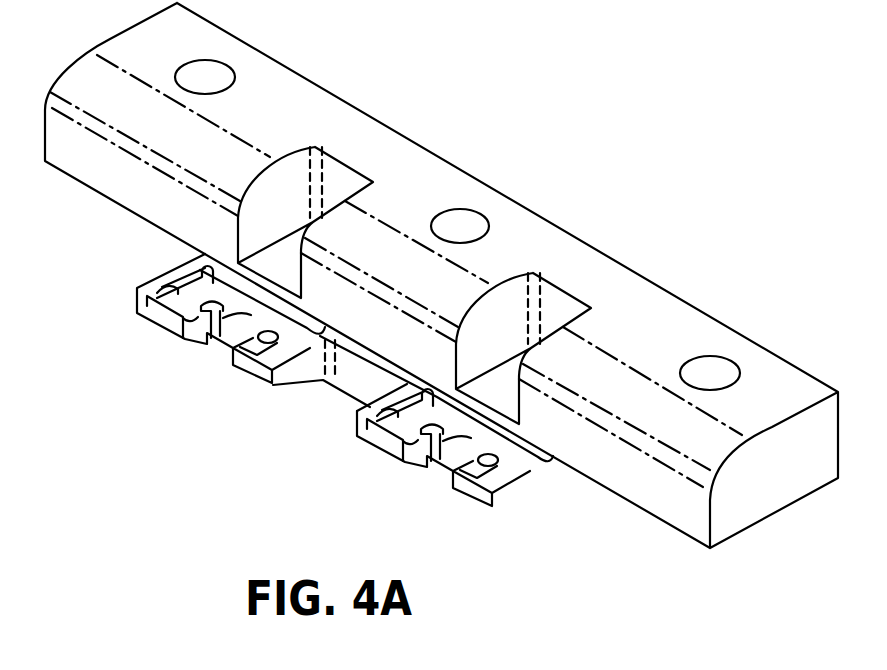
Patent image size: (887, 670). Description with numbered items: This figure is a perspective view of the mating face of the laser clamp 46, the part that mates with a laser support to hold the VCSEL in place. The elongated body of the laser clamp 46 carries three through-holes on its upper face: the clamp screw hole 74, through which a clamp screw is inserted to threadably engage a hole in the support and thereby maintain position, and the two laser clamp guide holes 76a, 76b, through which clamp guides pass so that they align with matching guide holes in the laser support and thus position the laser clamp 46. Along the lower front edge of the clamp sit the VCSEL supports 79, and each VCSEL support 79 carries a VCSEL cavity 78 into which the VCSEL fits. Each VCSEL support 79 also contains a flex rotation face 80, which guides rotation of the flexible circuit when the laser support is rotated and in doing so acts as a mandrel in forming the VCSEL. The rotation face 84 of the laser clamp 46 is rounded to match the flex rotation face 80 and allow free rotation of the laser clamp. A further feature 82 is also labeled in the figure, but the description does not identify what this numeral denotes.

The laser clamp 46 is at (812, 356).
The clamp screw hole 74 is at (482, 215).
The laser clamp guide hole 76a is at (708, 356).
The laser clamp guide hole 76b is at (210, 61).
The VCSEL cavity 78 is at (218, 335).
The VCSEL support 79 is at (285, 372).
The flex rotation face 80 is at (172, 308).
The recess 82 is at (267, 225).
The rotation face 84 is at (130, 125).